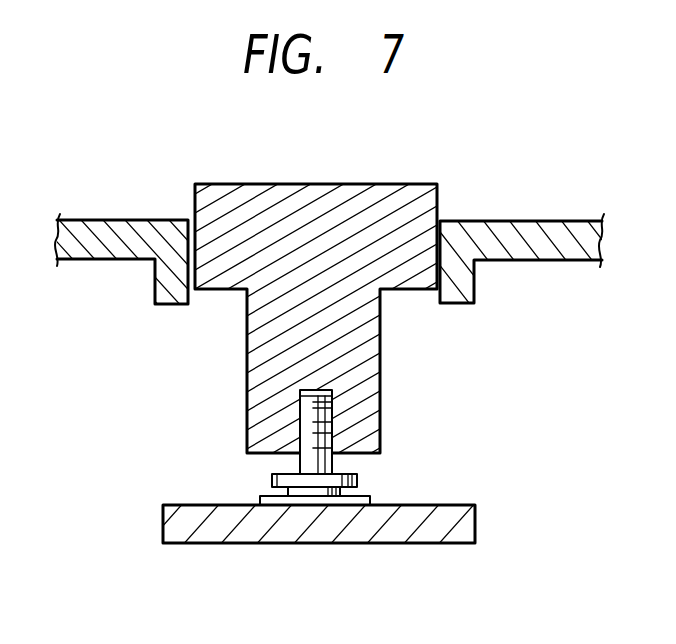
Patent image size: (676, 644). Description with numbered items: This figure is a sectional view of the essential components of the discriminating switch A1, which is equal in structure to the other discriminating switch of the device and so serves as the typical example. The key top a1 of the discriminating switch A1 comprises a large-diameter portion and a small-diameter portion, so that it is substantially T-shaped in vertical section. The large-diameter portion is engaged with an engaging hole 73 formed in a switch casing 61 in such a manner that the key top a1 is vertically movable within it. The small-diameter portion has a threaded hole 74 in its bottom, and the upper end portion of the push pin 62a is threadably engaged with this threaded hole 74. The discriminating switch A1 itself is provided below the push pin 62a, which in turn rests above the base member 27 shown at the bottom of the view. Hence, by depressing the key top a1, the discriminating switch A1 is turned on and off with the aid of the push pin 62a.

The key top a1 is at (327, 183).
The engaging hole 73 is at (187, 220).
The switch casing 61 is at (550, 228).
The threaded hole 74 is at (302, 393).
The push pin 62a is at (305, 462).
The discriminating switch A1 is at (345, 490).
The base plate 27 is at (318, 538).